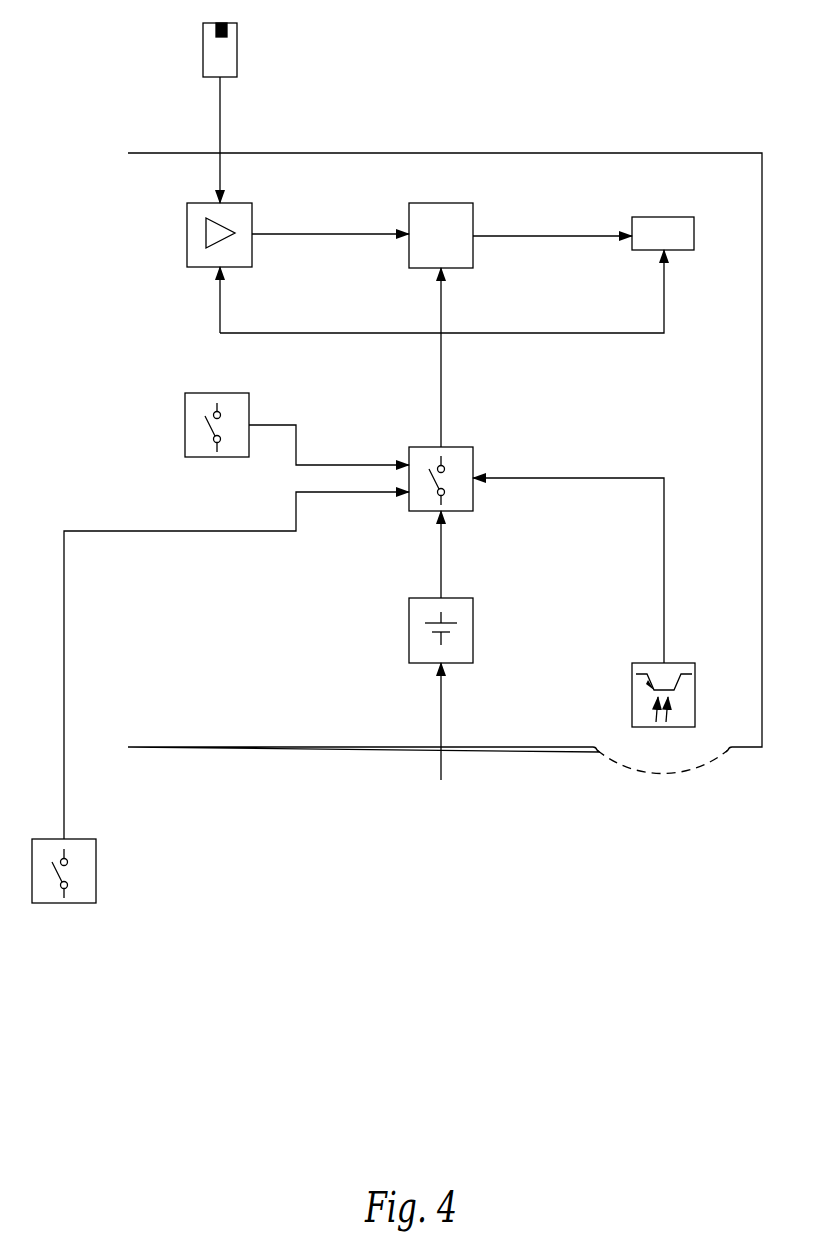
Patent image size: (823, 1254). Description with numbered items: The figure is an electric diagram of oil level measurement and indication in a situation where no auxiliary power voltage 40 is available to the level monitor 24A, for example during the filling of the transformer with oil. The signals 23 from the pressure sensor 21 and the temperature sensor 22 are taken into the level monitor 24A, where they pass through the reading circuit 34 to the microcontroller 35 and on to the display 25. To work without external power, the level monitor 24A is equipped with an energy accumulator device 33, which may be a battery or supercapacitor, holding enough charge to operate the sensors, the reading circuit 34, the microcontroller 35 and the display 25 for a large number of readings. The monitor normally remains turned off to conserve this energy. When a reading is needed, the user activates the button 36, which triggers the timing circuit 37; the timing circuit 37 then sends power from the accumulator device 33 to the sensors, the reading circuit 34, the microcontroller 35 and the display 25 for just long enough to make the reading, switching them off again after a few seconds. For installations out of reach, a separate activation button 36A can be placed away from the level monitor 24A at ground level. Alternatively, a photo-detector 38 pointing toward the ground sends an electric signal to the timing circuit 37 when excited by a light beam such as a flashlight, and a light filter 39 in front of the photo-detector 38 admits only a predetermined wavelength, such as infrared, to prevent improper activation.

The pressure sensor 21 is at (203, 56).
The temperature sensor 22 is at (227, 33).
The signals 23 is at (220, 118).
The level monitor 24A is at (128, 196).
The display 25 is at (662, 217).
The energy accumulator device 33 is at (452, 598).
The reading circuit 34 is at (230, 203).
The microcontroller 35 is at (452, 203).
The button 36 is at (232, 393).
The activation button 36A is at (76, 839).
The timing circuit 37 is at (453, 447).
The photo-detector 38 is at (677, 663).
The light filter 39 is at (690, 770).
The auxiliary power voltage 40 is at (442, 770).